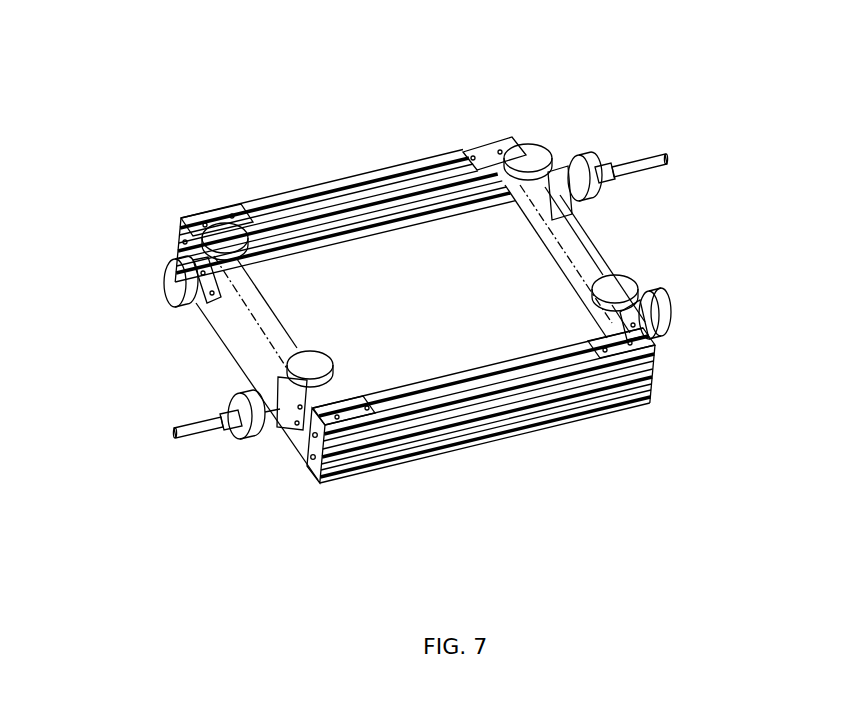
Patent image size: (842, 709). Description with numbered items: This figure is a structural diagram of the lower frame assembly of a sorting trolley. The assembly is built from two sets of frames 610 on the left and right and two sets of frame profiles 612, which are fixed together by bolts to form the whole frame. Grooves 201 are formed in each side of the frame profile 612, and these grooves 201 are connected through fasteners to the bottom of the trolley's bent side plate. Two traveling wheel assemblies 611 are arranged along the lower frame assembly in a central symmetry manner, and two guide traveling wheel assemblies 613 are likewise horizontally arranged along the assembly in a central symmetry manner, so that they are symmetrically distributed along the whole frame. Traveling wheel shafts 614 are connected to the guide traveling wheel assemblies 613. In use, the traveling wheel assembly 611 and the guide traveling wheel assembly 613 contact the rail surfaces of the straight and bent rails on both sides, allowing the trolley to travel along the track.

The groove 201 is at (406, 168).
The frame 610 is at (575, 263).
The traveling wheel assembly 611 is at (669, 305).
The frame profile 612 is at (330, 203).
The guide traveling wheel assembly 613 is at (583, 153).
The traveling wheel shaft 614 is at (648, 157).